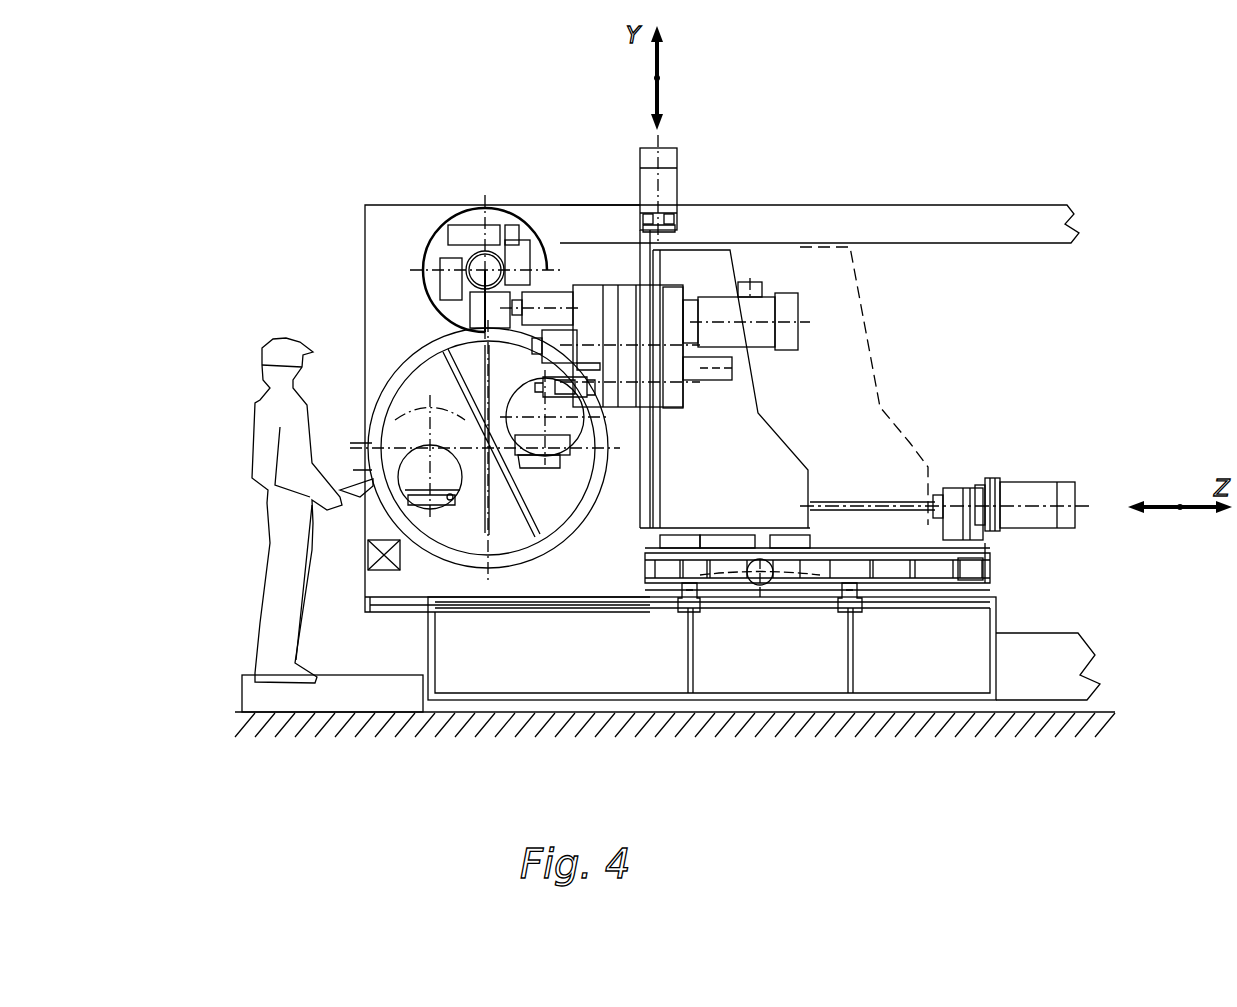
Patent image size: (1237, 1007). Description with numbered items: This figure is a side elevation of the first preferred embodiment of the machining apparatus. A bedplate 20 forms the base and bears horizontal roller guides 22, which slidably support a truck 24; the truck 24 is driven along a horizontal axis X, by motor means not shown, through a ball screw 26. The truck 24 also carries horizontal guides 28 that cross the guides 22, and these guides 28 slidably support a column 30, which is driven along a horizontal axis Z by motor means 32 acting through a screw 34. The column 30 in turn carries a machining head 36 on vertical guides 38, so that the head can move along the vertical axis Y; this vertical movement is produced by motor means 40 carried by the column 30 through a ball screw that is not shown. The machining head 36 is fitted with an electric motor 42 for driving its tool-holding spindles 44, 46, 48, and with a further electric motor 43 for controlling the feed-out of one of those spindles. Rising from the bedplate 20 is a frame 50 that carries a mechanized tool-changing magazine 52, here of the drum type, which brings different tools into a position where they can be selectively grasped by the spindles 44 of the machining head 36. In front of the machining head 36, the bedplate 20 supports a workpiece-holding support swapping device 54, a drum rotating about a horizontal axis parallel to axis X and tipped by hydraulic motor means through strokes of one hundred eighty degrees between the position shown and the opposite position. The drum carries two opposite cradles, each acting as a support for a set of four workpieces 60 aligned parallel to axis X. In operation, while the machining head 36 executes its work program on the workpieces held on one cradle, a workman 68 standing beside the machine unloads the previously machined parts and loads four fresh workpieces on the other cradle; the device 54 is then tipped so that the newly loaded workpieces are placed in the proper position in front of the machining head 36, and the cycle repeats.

The bedplate 20 is at (650, 672).
The horizontal roller guides 22 is at (843, 612).
The truck 24 is at (975, 580).
The ball screw 26 is at (795, 445).
The horizontal guides 28 is at (883, 543).
The column 30 is at (763, 530).
The motor means 32 is at (1032, 487).
The screw 34 is at (872, 500).
The machining head 36 is at (603, 318).
The vertical guides 38 is at (760, 435).
The motor means 40 is at (665, 182).
The electric motor 42 is at (757, 300).
The electric motor 43 is at (745, 395).
The tool-holding spindle 44 is at (540, 322).
The tool-holding spindle 46 is at (572, 358).
The tool-holding spindle 48 is at (590, 382).
The frame 50 is at (383, 305).
The mechanized tool-changing magazine 52 is at (470, 213).
The workpiece-holding support swapping device 54 is at (500, 540).
The workpieces 60 is at (212, 690).
The workman 68 is at (275, 357).